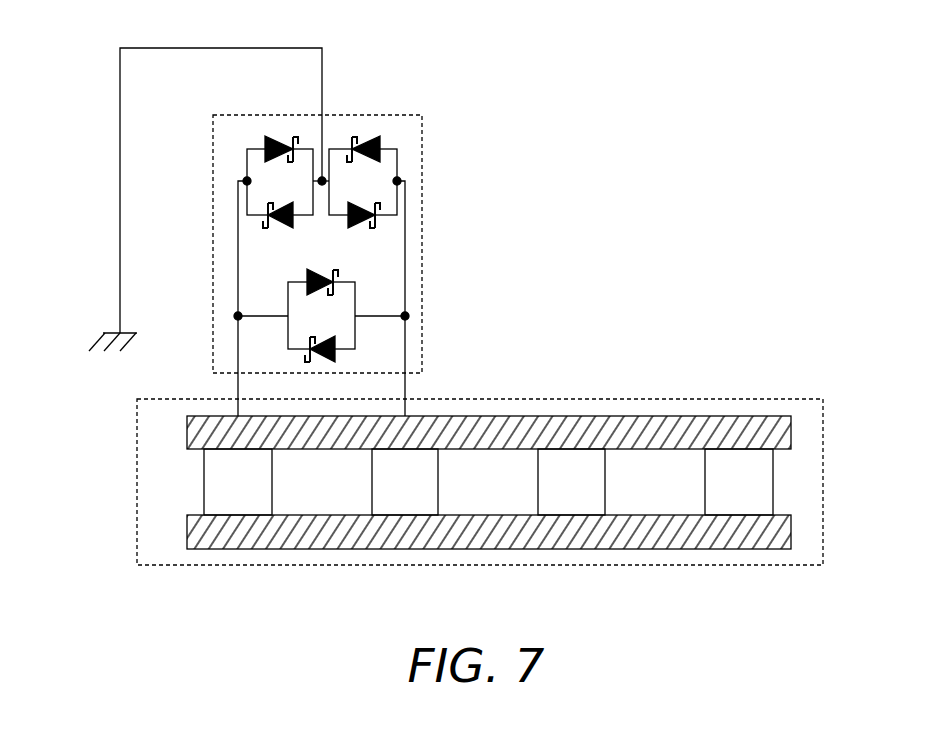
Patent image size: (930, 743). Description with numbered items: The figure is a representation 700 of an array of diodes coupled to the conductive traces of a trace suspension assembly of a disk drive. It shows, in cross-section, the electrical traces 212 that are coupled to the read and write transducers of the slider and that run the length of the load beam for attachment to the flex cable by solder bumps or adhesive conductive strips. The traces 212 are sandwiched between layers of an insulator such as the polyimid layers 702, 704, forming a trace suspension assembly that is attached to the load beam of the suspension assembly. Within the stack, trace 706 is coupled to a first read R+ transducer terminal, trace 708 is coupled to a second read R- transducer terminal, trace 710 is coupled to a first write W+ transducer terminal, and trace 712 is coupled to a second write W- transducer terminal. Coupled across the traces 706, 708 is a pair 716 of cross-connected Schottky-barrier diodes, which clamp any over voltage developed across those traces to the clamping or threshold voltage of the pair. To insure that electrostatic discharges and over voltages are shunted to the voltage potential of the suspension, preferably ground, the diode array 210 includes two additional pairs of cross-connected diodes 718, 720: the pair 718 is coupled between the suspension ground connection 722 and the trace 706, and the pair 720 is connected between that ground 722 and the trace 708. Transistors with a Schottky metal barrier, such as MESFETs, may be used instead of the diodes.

The magnetic head circuit system 700 is at (742, 132).
The diode array 210 is at (422, 197).
The electrical traces 212 is at (600, 399).
The polyimid layer 702 is at (287, 550).
The polyimid layer 704 is at (445, 415).
The trace 706 is at (204, 507).
The trace 708 is at (372, 507).
The trace 710 is at (538, 507).
The trace 712 is at (705, 497).
The pair of cross-connected Schottky-barrier diodes 716 is at (360, 295).
The pair of cross-connected diodes 718 is at (250, 138).
The pair of cross-connected diodes 720 is at (392, 130).
The ground lead 722 is at (120, 240).